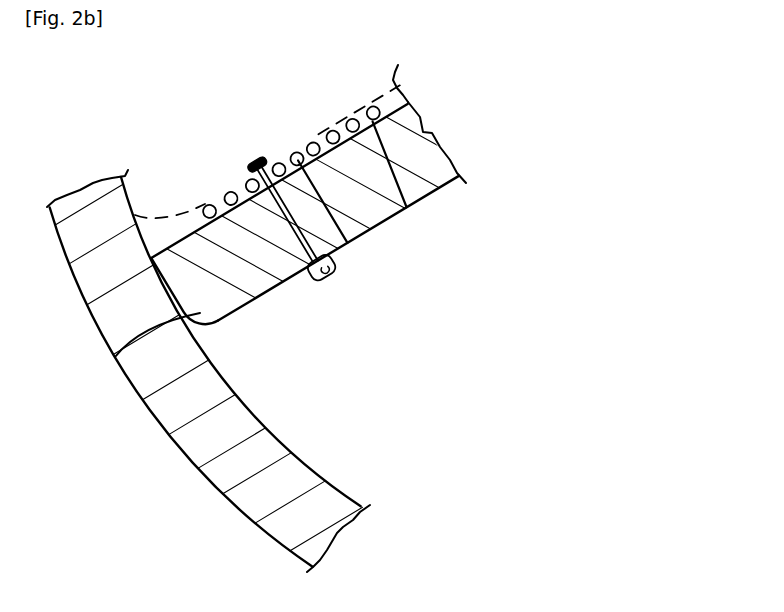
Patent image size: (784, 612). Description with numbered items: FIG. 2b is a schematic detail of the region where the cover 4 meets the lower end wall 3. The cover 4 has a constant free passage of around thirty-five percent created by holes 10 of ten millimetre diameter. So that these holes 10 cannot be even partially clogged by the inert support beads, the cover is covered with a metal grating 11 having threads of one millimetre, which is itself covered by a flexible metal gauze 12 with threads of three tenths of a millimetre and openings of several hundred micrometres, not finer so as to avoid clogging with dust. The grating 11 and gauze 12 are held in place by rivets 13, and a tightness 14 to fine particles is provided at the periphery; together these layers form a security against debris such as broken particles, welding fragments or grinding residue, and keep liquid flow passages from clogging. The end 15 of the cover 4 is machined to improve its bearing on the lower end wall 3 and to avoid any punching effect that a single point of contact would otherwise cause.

The lower end wall 3 is at (223, 470).
The cover 4 is at (257, 267).
The holes 10 is at (372, 203).
The metal grating 11 is at (311, 148).
The flexible metal gauze 12 is at (206, 198).
The rivets 13 is at (323, 281).
The tightness 14 is at (140, 207).
The end of the cover 15 is at (120, 354).